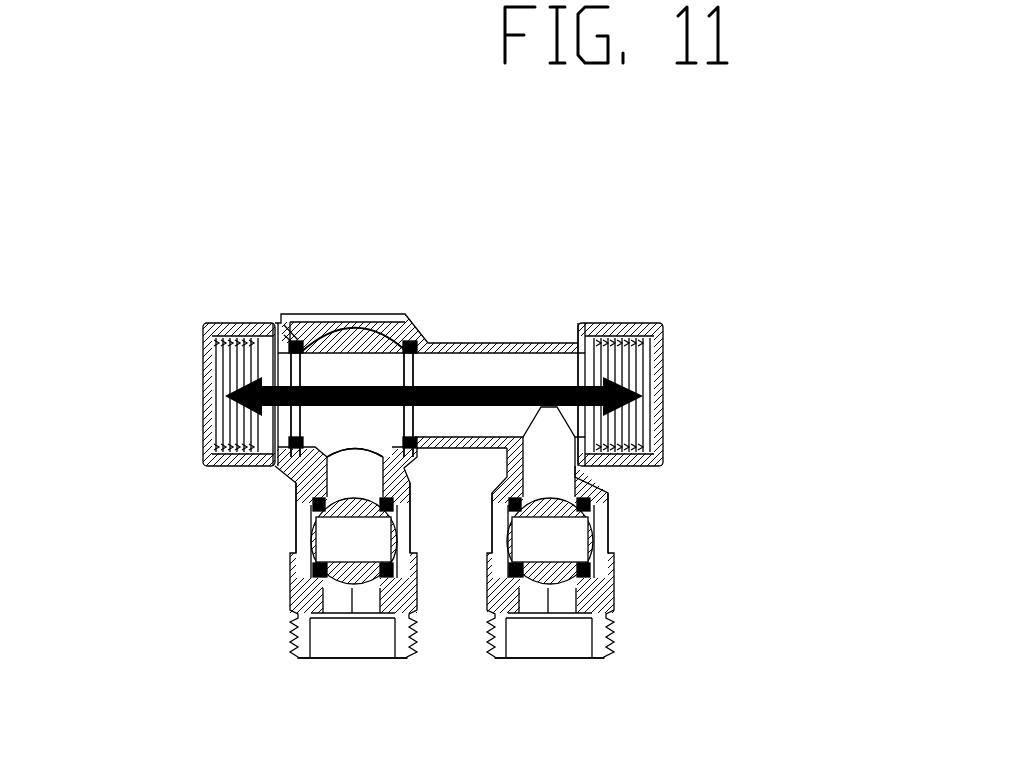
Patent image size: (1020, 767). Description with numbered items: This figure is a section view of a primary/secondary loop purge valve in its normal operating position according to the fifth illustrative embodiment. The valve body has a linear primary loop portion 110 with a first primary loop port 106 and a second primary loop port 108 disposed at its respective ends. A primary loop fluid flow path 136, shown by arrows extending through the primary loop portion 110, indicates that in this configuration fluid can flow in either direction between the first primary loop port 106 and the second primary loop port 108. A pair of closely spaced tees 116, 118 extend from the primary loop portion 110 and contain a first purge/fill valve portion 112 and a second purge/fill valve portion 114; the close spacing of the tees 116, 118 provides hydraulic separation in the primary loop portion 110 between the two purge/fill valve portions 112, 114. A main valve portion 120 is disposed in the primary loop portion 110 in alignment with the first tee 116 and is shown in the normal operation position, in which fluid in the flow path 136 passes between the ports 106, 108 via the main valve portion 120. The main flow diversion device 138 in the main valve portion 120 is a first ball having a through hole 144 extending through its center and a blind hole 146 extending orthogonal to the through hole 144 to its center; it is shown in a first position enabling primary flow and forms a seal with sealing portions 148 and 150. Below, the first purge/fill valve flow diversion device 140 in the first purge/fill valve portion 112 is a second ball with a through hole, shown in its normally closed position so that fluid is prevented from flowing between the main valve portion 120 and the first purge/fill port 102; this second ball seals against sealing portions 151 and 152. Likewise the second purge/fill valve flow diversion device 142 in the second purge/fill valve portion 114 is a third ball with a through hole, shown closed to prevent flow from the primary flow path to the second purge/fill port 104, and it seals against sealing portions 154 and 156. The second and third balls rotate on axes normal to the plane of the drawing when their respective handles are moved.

The first purge/fill port 102 is at (350, 660).
The second purge/fill port 104 is at (548, 660).
The first primary loop port 106 is at (203, 392).
The second primary loop port 108 is at (665, 392).
The primary loop portion 110 is at (527, 343).
The first purge/fill valve portion 112 is at (283, 580).
The second purge/fill valve portion 114 is at (616, 580).
The first tee 116 is at (293, 490).
The second tee 118 is at (610, 482).
The main valve portion 120 is at (352, 313).
The primary loop fluid flow path 136 is at (640, 394).
The main flow diversion device 138 is at (325, 333).
The first purge/fill valve flow diversion device 140 is at (290, 572).
The second purge/fill valve flow diversion device 142 is at (605, 628).
The through hole 144 is at (366, 368).
The blind hole 146 is at (327, 455).
The sealing portion 148 is at (305, 337).
The sealing portion 150 is at (416, 336).
The sealing portion 151 is at (297, 523).
The sealing portion 152 is at (290, 577).
The sealing portion 154 is at (607, 507).
The sealing portion 156 is at (614, 575).